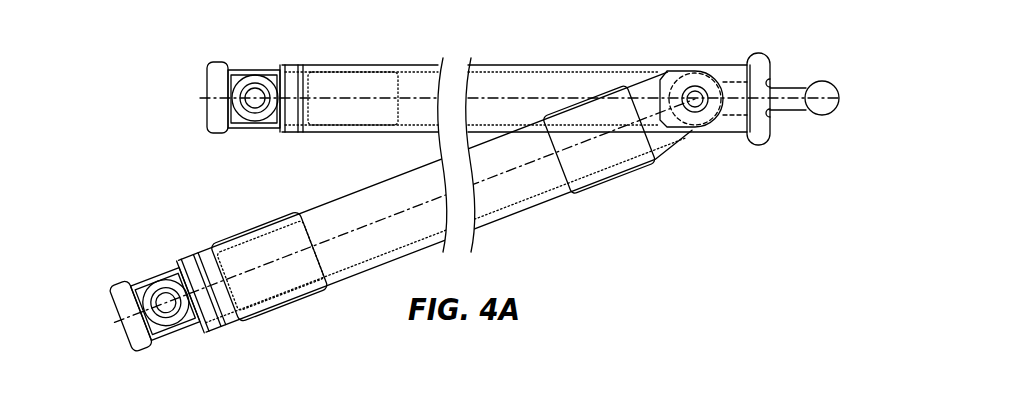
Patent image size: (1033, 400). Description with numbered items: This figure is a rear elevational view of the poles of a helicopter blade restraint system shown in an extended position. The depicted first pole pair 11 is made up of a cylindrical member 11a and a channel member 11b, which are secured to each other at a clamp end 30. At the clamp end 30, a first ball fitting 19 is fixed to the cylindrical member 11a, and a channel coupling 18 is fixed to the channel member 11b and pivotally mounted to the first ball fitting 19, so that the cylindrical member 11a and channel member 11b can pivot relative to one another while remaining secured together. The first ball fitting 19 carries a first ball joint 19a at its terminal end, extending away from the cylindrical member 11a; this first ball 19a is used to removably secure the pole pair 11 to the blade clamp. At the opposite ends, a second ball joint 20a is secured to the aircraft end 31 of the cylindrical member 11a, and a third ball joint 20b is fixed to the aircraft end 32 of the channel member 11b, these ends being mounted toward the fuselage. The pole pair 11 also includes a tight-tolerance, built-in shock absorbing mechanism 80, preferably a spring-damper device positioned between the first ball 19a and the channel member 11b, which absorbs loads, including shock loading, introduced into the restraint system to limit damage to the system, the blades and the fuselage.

The first pole pair 11 is at (625, 198).
The cylindrical member 11a is at (412, 63).
The channel member 11b is at (515, 213).
The channel coupling 18 is at (667, 143).
The first ball fitting 19 is at (772, 63).
The first ball joint 19a is at (838, 92).
The second ball joint 20a is at (218, 60).
The third ball joint 20b is at (120, 280).
The clamp end 30 is at (613, 57).
The aircraft end of the cylindrical member 31 is at (327, 80).
The aircraft end of the channel member 32 is at (207, 262).
The shock absorbing mechanism 80 is at (727, 73).